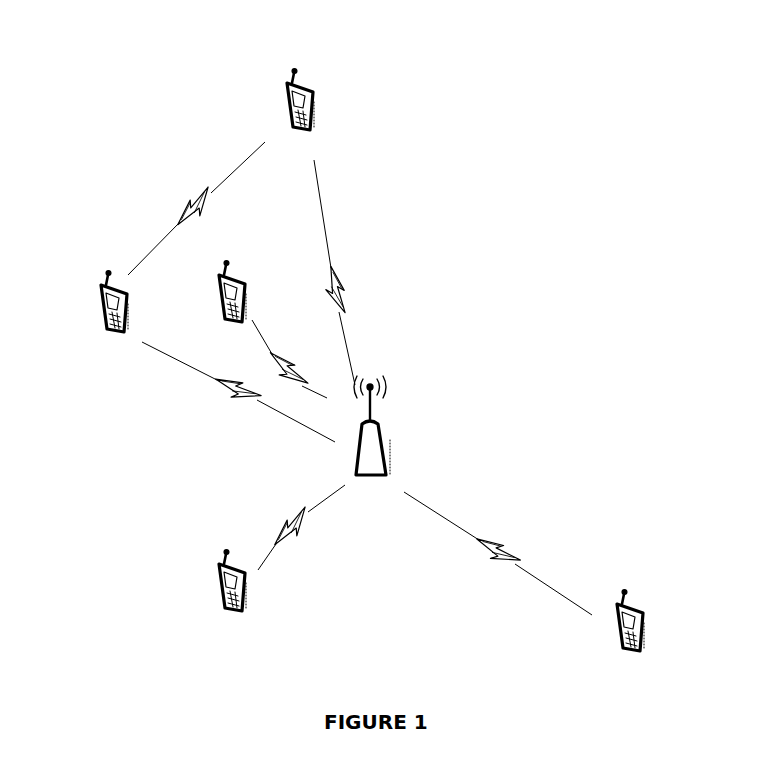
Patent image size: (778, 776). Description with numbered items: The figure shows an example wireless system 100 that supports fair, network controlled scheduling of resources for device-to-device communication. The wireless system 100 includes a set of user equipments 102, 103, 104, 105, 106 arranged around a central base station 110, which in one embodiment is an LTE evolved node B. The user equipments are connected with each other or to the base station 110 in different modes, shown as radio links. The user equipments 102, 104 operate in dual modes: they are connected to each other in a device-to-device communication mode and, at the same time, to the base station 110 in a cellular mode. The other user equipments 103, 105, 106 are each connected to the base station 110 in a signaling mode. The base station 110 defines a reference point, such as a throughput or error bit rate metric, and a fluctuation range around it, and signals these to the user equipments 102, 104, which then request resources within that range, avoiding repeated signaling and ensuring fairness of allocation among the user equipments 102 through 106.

The wireless system 100 is at (606, 72).
The user equipment 102 is at (283, 98).
The user equipment 103 is at (216, 302).
The user equipment 104 is at (97, 294).
The user equipment 105 is at (212, 584).
The user equipment 106 is at (641, 602).
The base station 110 is at (386, 440).